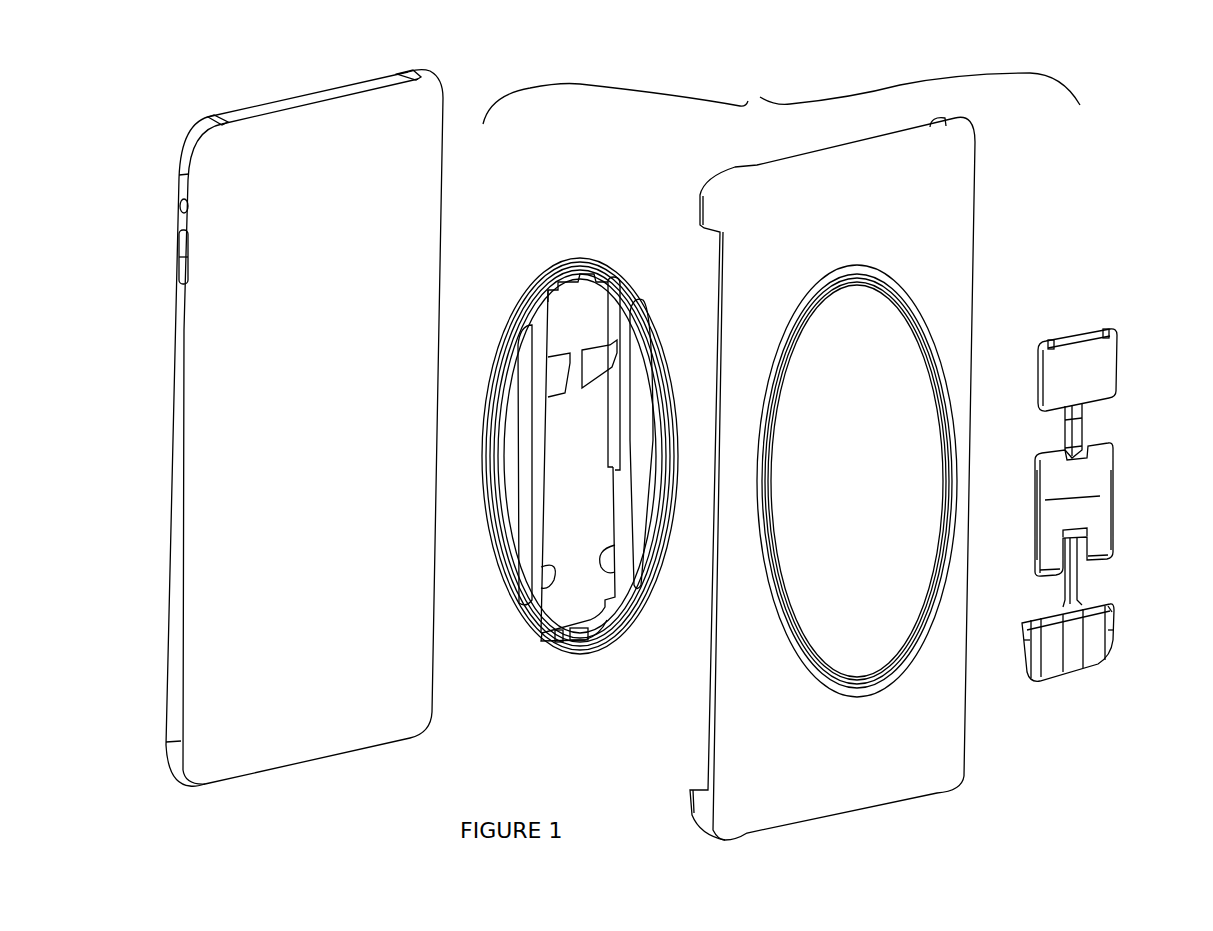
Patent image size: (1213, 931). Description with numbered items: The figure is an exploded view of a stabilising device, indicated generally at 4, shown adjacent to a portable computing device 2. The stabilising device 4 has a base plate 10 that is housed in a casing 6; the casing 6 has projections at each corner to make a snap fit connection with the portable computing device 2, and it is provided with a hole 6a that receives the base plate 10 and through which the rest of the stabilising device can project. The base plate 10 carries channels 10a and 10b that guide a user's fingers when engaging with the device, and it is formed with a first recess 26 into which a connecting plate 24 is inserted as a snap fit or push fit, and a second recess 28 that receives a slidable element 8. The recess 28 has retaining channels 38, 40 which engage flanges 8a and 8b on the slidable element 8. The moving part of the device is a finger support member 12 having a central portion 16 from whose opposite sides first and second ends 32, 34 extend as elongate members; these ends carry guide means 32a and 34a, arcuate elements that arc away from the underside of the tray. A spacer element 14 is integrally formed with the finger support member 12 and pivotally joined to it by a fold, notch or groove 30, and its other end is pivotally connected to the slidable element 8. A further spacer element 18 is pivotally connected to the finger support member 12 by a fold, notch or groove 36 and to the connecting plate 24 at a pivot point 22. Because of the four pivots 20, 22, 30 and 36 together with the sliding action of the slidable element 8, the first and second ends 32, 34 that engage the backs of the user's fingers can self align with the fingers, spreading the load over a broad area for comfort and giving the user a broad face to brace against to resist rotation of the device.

The portable computing device 2 is at (257, 106).
The stabilising device 4 is at (781, 91).
The casing 6 is at (976, 160).
The hole 6a is at (957, 340).
The base plate 10 is at (549, 268).
The channel 10a is at (551, 640).
The channel 10b is at (597, 627).
The first recess 26 is at (596, 300).
The second recess 28 is at (575, 562).
The retaining channel 38 is at (550, 570).
The retaining channel 40 is at (600, 553).
The connecting plate 24 is at (1115, 340).
The pivot point 22 is at (1083, 402).
The further spacer element 18 is at (1085, 422).
The fold, notch or groove 36 is at (1067, 442).
The finger support member 12 is at (1118, 492).
The second end 34 is at (1035, 480).
The first end 32 is at (1114, 476).
The central portion 16 is at (1070, 507).
The fold, notch or groove 30 is at (1108, 523).
The guide means 34a is at (1048, 574).
The guide means 32a is at (1104, 562).
The spacer element 14 is at (1086, 586).
The pivot 20 is at (1112, 602).
The slidable element 8 is at (1073, 683).
The flange 8a is at (1025, 646).
The flange 8b is at (1114, 628).